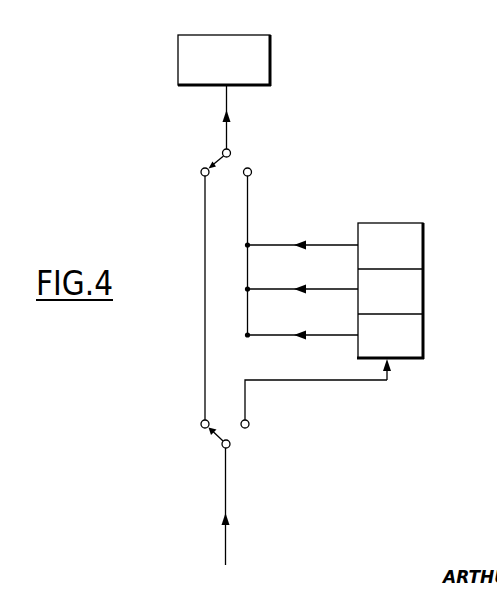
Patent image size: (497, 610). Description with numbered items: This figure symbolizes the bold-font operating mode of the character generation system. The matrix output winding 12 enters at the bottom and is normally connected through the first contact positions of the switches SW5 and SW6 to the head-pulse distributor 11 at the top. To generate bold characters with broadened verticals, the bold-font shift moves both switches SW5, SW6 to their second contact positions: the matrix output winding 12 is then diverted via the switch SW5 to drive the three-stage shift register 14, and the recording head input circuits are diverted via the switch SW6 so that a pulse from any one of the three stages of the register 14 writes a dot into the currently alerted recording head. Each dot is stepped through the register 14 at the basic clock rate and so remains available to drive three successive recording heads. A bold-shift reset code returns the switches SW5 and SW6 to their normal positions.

The head-pulse distributor 11 is at (224, 60).
The matrix output winding 12 is at (226, 492).
The three-stage shift register 14 is at (423, 247).
The switch SW5 is at (245, 430).
The switch SW6 is at (247, 158).